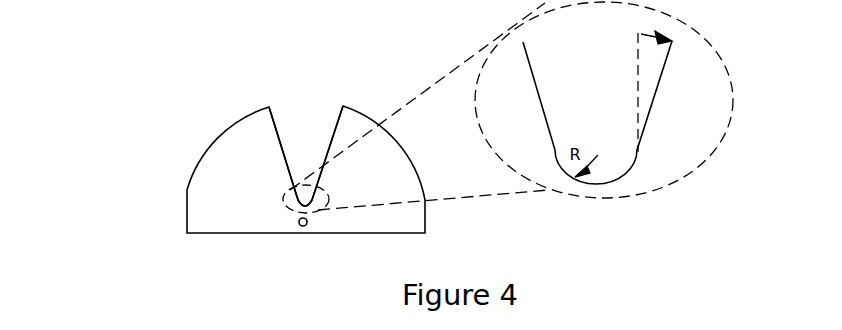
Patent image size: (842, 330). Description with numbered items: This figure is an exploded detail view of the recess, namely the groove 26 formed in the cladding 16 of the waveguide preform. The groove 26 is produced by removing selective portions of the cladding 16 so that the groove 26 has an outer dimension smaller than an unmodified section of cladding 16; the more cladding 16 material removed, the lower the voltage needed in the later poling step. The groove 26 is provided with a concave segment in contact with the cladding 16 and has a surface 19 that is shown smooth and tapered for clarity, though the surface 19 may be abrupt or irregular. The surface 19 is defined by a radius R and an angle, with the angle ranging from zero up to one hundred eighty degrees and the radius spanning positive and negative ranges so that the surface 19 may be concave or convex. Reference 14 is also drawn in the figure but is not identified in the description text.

The pivot 14 is at (301, 220).
The cladding 16 is at (185, 193).
The surface 19 is at (273, 125).
The groove 26 is at (313, 76).